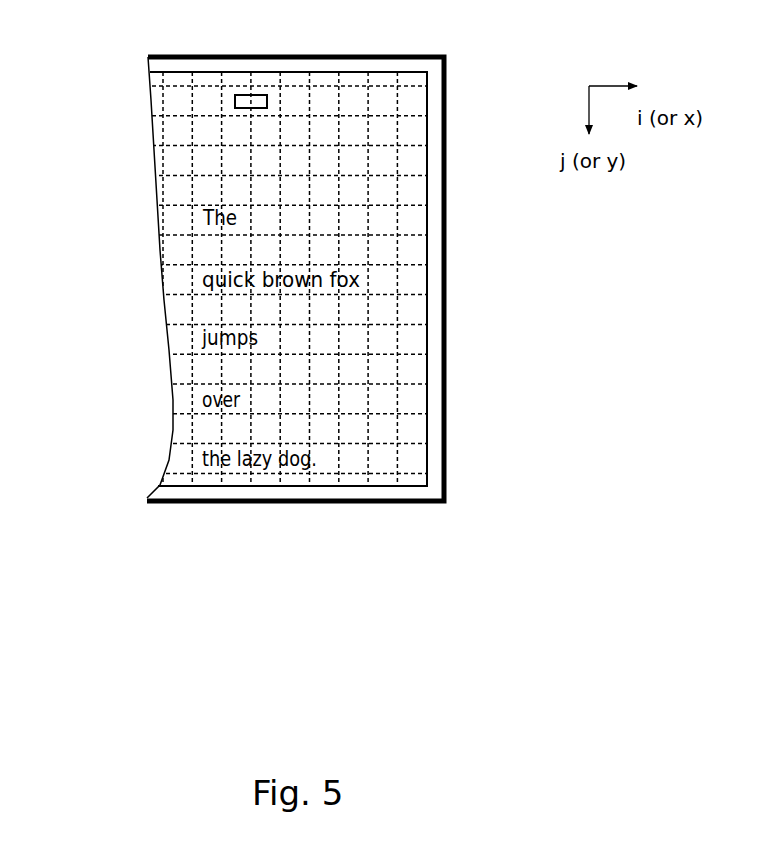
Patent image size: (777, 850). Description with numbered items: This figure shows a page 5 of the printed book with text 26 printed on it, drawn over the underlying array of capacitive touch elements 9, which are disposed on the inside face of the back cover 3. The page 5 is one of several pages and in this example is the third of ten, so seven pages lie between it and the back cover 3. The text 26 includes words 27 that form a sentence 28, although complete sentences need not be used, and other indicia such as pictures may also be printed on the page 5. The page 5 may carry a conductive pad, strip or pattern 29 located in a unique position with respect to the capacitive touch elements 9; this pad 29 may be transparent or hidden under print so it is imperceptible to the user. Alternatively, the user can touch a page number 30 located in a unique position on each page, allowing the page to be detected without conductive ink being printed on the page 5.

The back cover 3 is at (437, 337).
The page 5 is at (417, 370).
The capacitive touch elements 9 is at (417, 128).
The text 26 is at (170, 283).
The words 27 is at (218, 481).
The sentence 28 is at (332, 477).
The conductive pad, strip or pattern 29 is at (262, 95).
The page number 30 is at (428, 170).